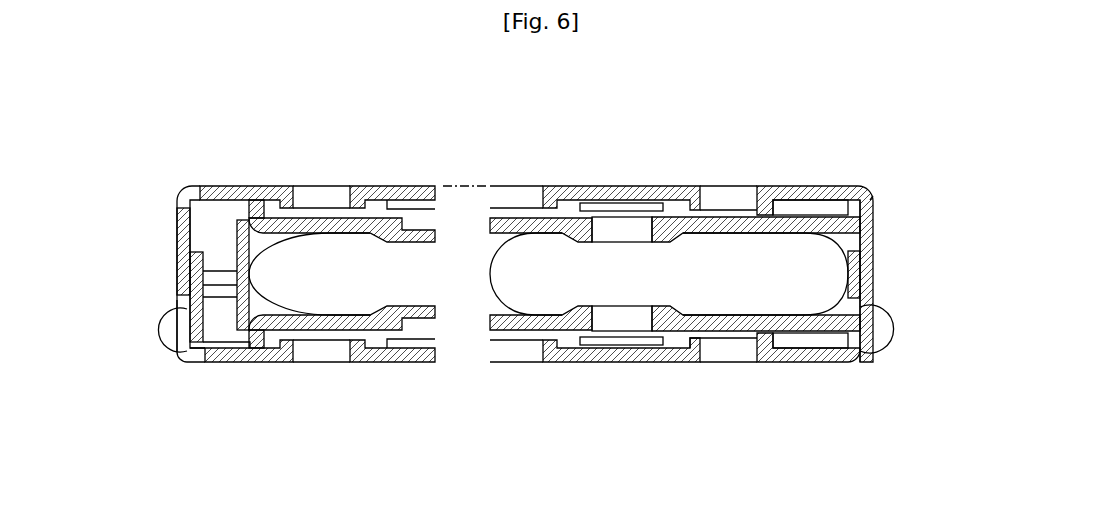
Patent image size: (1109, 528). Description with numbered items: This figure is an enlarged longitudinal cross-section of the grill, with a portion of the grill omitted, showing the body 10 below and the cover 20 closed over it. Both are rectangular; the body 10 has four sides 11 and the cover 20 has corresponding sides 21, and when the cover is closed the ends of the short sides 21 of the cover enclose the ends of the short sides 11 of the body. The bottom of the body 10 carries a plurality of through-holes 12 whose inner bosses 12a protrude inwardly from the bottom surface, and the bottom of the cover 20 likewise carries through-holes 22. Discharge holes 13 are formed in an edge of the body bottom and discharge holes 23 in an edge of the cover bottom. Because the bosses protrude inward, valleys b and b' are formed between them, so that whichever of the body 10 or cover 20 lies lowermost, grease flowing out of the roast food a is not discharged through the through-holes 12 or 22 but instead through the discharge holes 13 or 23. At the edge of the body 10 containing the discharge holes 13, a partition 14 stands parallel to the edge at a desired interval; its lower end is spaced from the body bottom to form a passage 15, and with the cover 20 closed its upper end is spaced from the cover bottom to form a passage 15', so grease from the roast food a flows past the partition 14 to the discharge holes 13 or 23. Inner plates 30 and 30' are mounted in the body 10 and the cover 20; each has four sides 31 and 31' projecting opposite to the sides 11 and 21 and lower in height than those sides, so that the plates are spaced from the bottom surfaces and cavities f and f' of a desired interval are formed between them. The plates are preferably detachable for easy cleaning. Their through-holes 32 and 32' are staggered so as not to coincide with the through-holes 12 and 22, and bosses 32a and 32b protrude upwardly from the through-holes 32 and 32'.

The body 10 is at (415, 363).
The sides of the body 11 is at (885, 343).
The through-holes of the body 12 is at (718, 363).
The inner bosses 12a is at (685, 363).
The discharge holes of the body 13 is at (205, 352).
The partition 14 is at (240, 238).
The passage 15 is at (219, 365).
The passage 15' is at (216, 163).
The cover 20 is at (400, 186).
The sides of the cover 21 is at (860, 207).
The through-holes of the cover 22 is at (703, 196).
The discharge holes of the cover 23 is at (183, 190).
The inner plate 30 is at (342, 384).
The inner plate 30' is at (342, 163).
The sides of the inner plate 31 is at (756, 366).
The sides of the inner plate 31' is at (757, 181).
The through-holes of the inner plate 32 is at (621, 373).
The through-holes of the inner plate 32' is at (621, 185).
The bosses 32a is at (578, 312).
The bosses 32b is at (570, 245).
The roast food a is at (495, 265).
The valleys b is at (531, 273).
The contact surface b' is at (906, 274).
The cavity f is at (810, 398).
The cavity f' is at (810, 153).